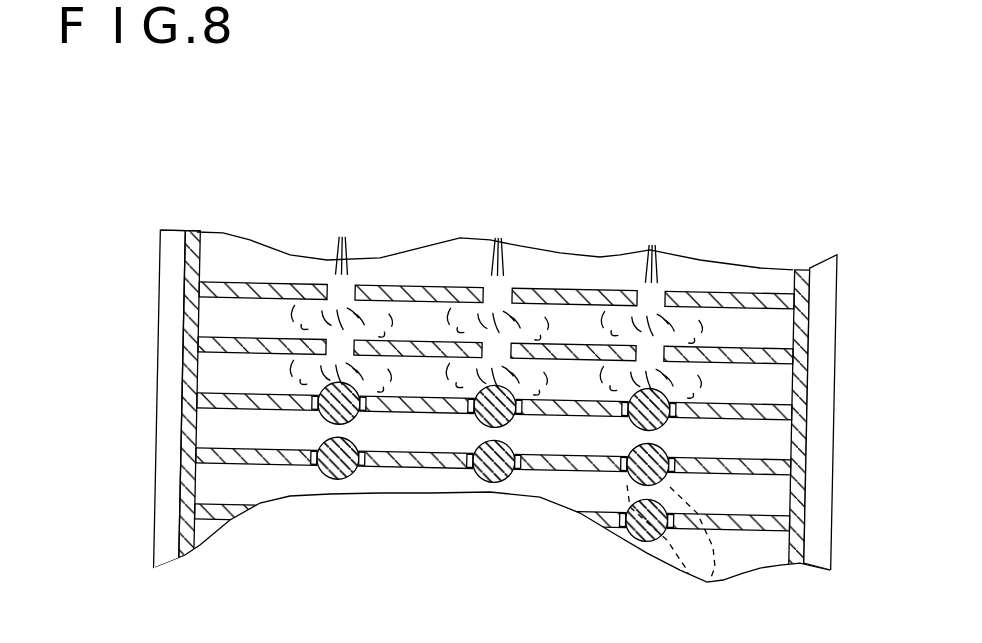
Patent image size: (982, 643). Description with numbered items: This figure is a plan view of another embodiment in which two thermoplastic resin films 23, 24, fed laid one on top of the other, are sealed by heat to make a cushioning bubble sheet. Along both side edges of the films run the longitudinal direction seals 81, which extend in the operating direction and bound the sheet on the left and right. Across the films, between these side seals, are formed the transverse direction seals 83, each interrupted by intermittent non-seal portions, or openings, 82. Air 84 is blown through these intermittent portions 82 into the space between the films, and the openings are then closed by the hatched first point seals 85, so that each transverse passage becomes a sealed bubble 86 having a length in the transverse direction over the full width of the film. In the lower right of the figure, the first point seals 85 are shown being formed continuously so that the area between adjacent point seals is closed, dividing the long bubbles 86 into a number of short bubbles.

The thermoplastic resin film 23 is at (147, 357).
The thermoplastic resin film 24 is at (147, 357).
The longitudinal direction seal 81 is at (509, 359).
The intermittent non-seal portion (opening) 82 is at (492, 288).
The transverse direction seal 83 is at (494, 427).
The air 84 is at (516, 210).
The first point seal 85 is at (516, 511).
The bubble 86 is at (830, 455).